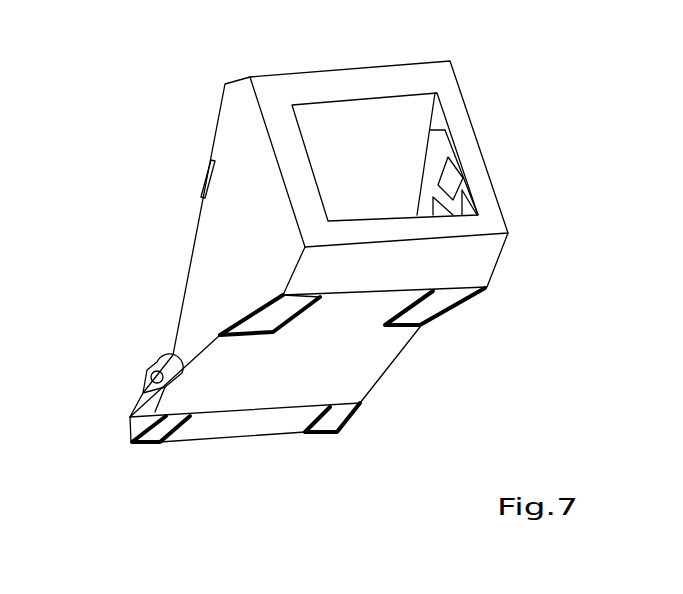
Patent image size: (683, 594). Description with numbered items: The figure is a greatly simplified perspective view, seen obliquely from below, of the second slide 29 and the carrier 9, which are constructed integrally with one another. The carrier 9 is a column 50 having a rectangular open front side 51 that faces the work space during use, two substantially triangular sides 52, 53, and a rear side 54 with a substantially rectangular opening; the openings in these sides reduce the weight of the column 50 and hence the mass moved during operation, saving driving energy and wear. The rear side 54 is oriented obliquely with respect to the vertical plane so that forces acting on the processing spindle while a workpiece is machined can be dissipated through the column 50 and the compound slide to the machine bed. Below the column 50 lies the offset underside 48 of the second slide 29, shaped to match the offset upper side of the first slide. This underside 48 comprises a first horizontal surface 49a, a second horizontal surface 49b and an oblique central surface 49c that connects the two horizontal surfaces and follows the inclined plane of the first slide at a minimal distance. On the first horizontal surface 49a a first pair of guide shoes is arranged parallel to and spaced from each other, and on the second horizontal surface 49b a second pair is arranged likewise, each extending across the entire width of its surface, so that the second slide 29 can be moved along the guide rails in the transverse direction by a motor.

The carrier 9 is at (163, 157).
The column 50 is at (230, 127).
The front side 51 is at (188, 260).
The side 52 is at (500, 200).
The side 53 is at (245, 232).
The rear side 54 is at (460, 123).
The offset underside 48 is at (243, 402).
The first horizontal surface 49a is at (277, 425).
The second horizontal surface 49b is at (368, 313).
The central surface 49c is at (358, 365).
The second slide 29 is at (213, 460).